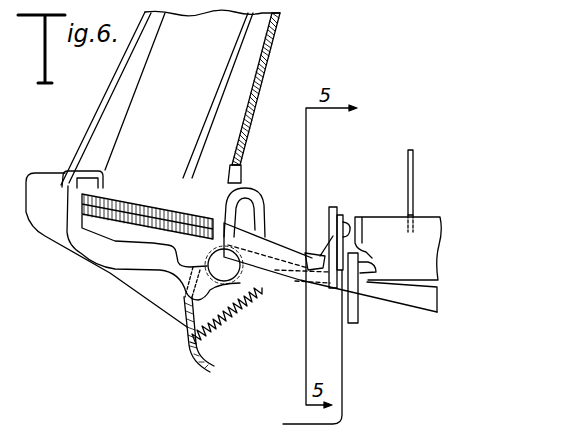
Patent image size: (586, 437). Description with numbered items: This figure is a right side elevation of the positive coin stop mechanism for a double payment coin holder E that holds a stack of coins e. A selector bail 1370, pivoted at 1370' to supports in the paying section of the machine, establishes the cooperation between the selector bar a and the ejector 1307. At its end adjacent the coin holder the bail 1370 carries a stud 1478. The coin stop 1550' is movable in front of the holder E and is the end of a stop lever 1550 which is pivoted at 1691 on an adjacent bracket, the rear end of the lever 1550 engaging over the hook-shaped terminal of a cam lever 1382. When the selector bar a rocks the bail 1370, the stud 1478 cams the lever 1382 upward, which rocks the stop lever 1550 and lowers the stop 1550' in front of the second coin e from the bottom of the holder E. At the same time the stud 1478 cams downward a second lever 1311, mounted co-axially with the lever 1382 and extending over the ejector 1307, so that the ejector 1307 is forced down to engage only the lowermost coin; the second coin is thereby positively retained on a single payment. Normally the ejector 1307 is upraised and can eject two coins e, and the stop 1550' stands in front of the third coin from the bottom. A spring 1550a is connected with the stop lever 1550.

The double payment coin holder E is at (208, 70).
The coin e is at (147, 213).
The selector bar a is at (413, 170).
The coin stop 1550' is at (59, 155).
The stop lever 1550 is at (145, 250).
The pivot 1691 is at (187, 313).
The ejector 1307 is at (293, 290).
The spring 1550a is at (217, 323).
The cam lever 1382 is at (332, 207).
The second lever 1311 is at (339, 213).
The stud 1478 is at (348, 224).
The selector bail 1370 is at (406, 245).
The pivot 1370' is at (383, 300).